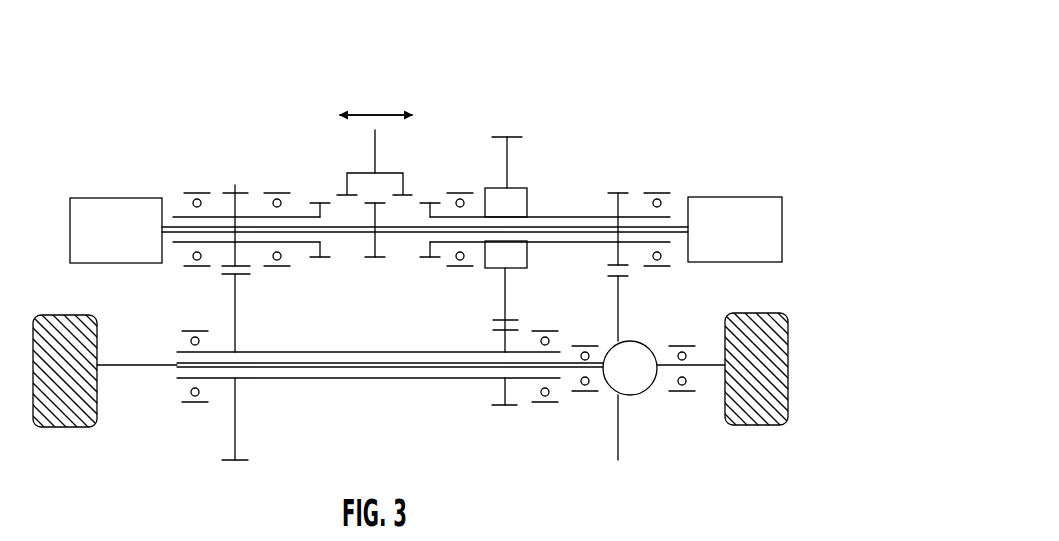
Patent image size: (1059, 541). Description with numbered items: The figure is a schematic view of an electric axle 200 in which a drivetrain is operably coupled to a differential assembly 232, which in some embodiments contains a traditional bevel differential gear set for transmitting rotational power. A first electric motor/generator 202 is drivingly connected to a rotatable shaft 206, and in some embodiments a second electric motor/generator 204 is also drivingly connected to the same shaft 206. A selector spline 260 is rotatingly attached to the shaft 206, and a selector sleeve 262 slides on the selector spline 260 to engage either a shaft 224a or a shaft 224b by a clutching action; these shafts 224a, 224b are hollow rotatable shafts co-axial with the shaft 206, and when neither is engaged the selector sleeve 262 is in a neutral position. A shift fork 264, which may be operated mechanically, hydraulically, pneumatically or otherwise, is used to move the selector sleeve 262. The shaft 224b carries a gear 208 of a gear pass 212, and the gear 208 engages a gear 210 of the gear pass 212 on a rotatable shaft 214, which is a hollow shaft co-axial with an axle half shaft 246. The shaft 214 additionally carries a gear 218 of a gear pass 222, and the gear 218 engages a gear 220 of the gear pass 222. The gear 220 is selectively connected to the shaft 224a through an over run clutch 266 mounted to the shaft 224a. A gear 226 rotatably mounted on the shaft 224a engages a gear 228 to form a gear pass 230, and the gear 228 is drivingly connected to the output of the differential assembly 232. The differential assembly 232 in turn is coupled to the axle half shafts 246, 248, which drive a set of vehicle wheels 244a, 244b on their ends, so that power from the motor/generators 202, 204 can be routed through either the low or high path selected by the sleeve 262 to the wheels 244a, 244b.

The electric axle 200 is at (649, 60).
The first electric motor/generator 202 is at (132, 245).
The second electric motor/generator 204 is at (752, 243).
The rotatable shaft 206 is at (175, 218).
The gear 208 is at (237, 210).
The gear 210 is at (237, 383).
The gear pass 212 is at (203, 449).
The rotatable shaft 214 is at (368, 378).
The gear 218 is at (507, 409).
The gear 220 is at (506, 159).
The gear pass 222 is at (529, 318).
The shaft 224a is at (560, 217).
The shaft 224b is at (303, 255).
The gear 226 is at (611, 211).
The gear 228 is at (623, 385).
The gear pass 230 is at (632, 285).
The differential assembly 232 is at (647, 381).
The vehicle wheel 244a is at (85, 457).
The vehicle wheel 244b is at (775, 457).
The axle half shaft 246 is at (135, 367).
The axle half shaft 248 is at (703, 362).
The selector spline 260 is at (373, 272).
The selector sleeve 262 is at (405, 170).
The shift fork 264 is at (371, 158).
The over run clutch 266 is at (511, 258).